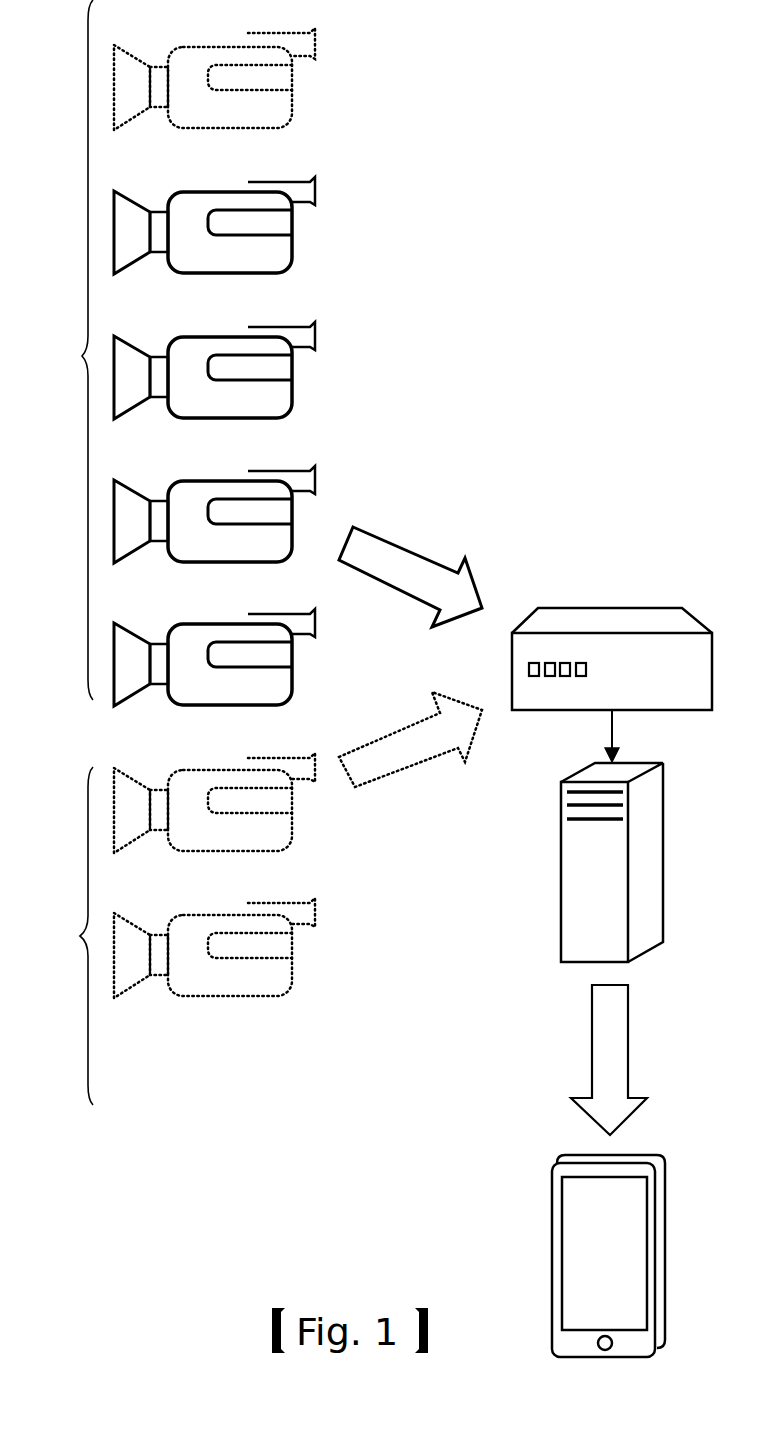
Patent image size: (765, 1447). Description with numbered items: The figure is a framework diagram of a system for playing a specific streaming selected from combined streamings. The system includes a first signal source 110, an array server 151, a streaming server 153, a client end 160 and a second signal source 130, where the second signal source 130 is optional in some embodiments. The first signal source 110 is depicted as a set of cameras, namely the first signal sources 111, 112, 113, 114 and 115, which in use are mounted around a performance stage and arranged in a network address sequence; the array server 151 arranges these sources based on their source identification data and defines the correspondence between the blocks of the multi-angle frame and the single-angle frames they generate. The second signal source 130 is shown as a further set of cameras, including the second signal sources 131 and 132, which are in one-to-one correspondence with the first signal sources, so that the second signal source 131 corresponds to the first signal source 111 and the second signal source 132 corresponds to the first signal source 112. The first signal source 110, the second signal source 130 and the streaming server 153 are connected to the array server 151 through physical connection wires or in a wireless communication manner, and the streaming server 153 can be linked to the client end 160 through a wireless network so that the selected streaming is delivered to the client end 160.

The first signal source 110 is at (64, 350).
The first signal source 111 is at (230, 624).
The first signal source 112 is at (230, 481).
The first signal source 113 is at (230, 337).
The first signal source 114 is at (230, 192).
The first signal source 115 is at (230, 47).
The second signal source 130 is at (64, 936).
The second signal source 131 is at (230, 770).
The second signal source 132 is at (230, 915).
The array server 151 is at (697, 704).
The streaming server 153 is at (615, 952).
The client end 160 is at (550, 1262).